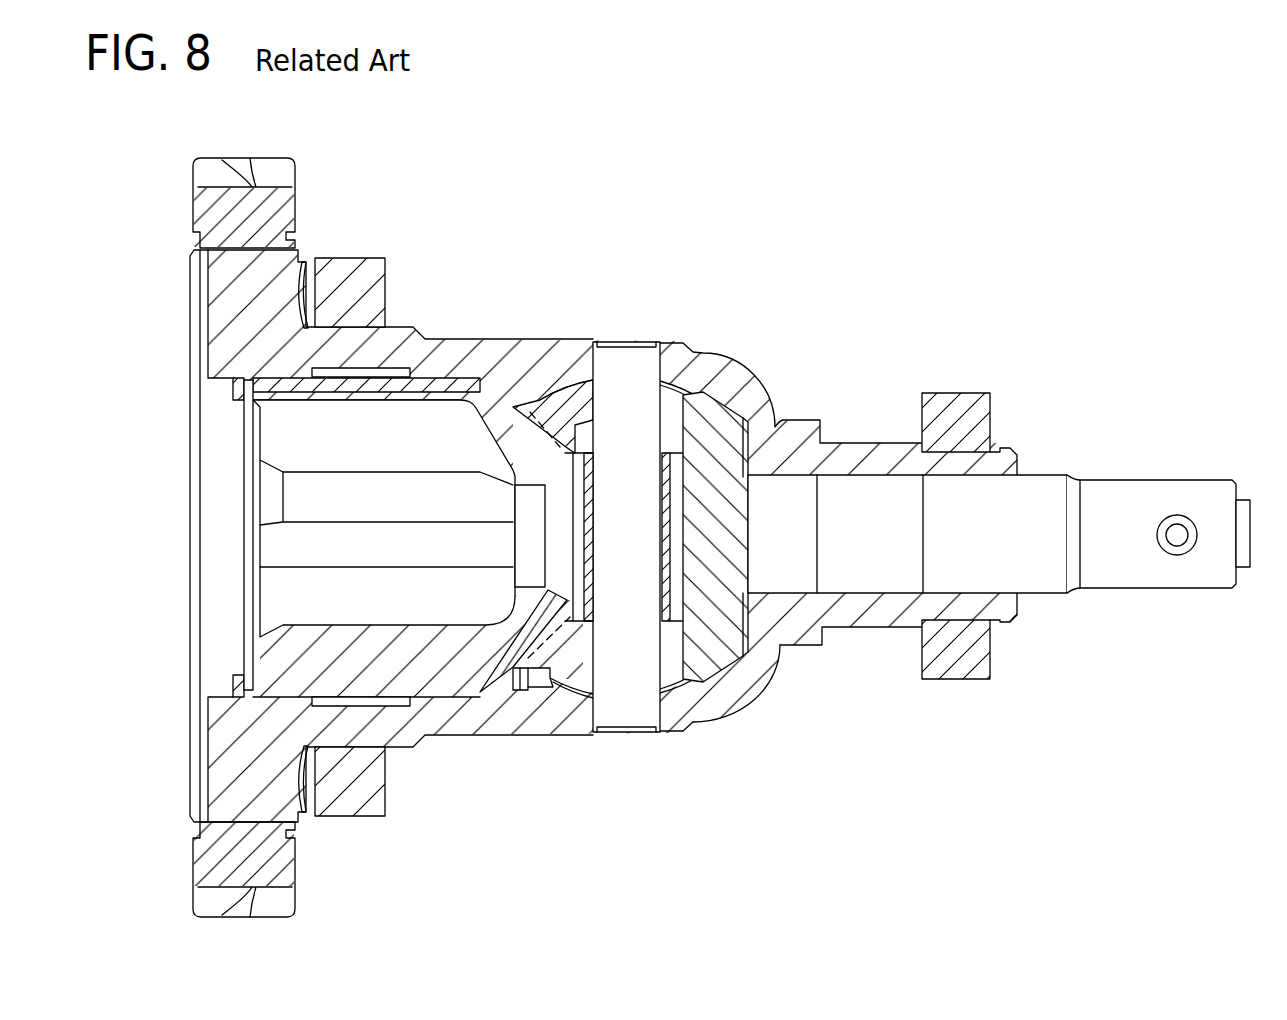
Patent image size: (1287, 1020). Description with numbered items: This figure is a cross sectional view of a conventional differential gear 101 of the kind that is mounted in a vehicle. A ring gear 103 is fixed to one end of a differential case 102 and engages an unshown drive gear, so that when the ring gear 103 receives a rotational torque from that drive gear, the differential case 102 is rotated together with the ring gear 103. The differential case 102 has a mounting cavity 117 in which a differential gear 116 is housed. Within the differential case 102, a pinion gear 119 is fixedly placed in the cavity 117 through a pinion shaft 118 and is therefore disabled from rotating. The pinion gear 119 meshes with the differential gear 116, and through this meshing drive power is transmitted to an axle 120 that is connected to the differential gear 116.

The differential gear 101 is at (810, 219).
The differential case 102 is at (735, 358).
The ring gear 103 is at (295, 213).
The differential gear 116 is at (730, 450).
The mounting cavity 117 is at (543, 393).
The pinion shaft 118 is at (636, 357).
The pinion gear 119 is at (693, 690).
The axle 120 is at (1118, 492).